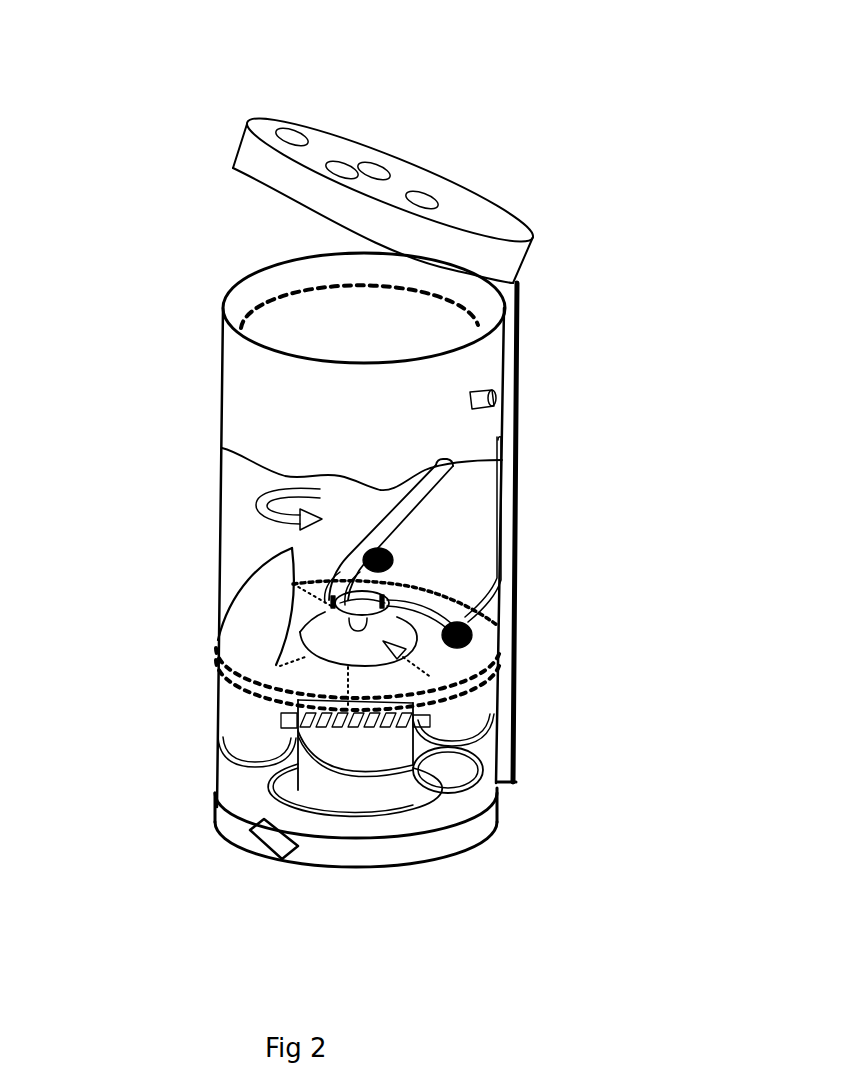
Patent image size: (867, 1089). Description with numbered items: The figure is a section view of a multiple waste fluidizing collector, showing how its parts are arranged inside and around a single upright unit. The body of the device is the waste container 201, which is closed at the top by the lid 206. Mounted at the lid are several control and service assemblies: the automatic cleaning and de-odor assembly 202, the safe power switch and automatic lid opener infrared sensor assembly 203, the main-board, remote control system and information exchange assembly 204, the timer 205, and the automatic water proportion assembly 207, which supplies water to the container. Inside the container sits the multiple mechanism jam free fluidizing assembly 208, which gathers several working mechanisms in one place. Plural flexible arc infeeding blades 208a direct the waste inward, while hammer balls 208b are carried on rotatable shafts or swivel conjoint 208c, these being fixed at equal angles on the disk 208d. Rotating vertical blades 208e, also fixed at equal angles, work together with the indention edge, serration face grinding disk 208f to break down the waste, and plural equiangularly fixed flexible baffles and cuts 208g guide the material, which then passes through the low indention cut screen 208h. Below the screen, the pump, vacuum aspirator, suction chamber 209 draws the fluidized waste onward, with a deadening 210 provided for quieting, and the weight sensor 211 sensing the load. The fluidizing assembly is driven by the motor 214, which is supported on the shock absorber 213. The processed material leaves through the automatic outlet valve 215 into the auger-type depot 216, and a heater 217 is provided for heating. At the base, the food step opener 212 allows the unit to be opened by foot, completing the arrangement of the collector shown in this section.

The waste container 201 is at (253, 529).
The automatic cleaning and de-odor assembly 202 is at (327, 292).
The safe power switch and automatic lid opener infrared sensor assembly 203 is at (291, 132).
The main-board, remote control system and information exchange assembly 204 is at (344, 171).
The timer 205 is at (376, 171).
The lid 206 is at (407, 181).
The automatic water proportion assembly 207 is at (455, 462).
The multiple mechanism jam free fluidizing assembly 208 is at (440, 461).
The flexible arc infeeding blades 208a is at (390, 549).
The hammer balls 208b is at (355, 580).
The rotatable shafts or swivel conjoint 208c is at (297, 584).
The disk 208d is at (338, 578).
The rotating vertical blades 208e is at (388, 602).
The indention edge, serration face grinding disk 208f is at (470, 636).
The flexible baffles and cuts 208g is at (253, 604).
The low indention cut screen 208h is at (440, 672).
The pump, vacuum aspirator, suction chamber 209 is at (420, 732).
The deadening 210 is at (500, 764).
The weight sensor 211 is at (430, 850).
The food step opener 212 is at (272, 849).
The shock absorber 213 is at (280, 792).
The motor 214 is at (330, 775).
The automatic outlet valve 215 is at (250, 747).
The auger-type depot 216 is at (265, 723).
The heater 217 is at (262, 722).